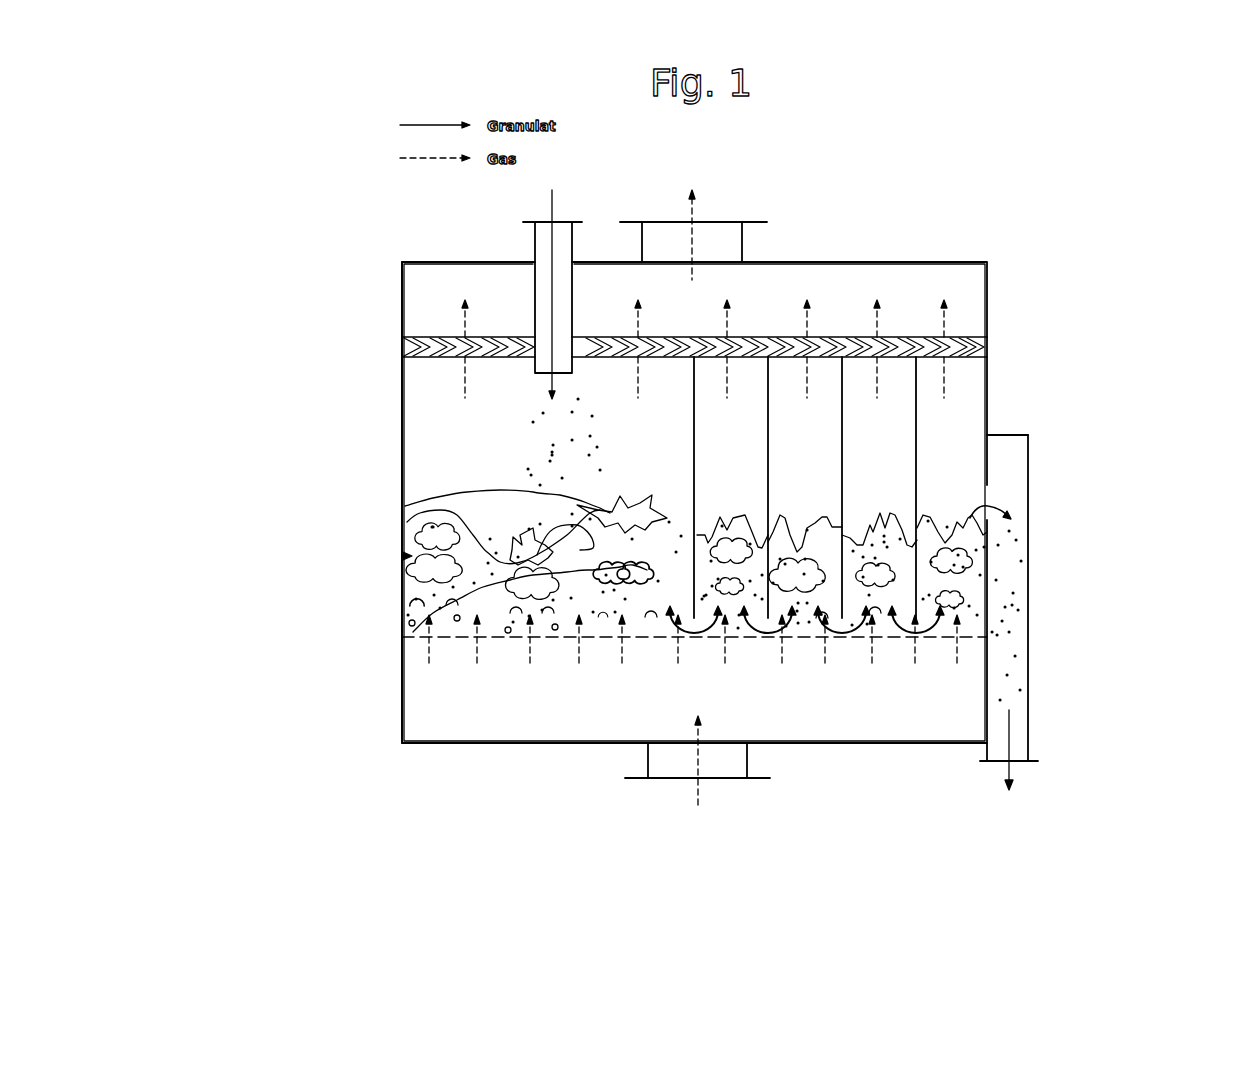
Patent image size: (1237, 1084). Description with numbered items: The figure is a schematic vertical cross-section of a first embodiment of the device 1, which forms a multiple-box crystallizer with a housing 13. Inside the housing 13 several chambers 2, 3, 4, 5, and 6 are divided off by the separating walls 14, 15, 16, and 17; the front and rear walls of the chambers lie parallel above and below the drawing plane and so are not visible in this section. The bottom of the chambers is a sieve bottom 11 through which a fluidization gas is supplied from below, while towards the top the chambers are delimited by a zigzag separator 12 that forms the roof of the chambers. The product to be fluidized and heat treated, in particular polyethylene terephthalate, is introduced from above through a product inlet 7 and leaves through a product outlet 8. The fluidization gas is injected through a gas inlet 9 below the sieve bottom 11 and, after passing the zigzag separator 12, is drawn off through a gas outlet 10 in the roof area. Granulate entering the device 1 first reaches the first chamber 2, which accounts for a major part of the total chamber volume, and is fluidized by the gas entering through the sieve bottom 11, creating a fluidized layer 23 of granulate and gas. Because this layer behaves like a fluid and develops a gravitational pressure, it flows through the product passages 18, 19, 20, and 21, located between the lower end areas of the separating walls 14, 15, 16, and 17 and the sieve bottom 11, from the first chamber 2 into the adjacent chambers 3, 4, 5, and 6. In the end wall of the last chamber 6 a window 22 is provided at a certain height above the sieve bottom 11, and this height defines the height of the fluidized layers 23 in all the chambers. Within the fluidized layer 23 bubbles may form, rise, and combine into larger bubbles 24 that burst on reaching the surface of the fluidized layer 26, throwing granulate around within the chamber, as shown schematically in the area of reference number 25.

The device 1 is at (940, 222).
The first chamber 2 is at (429, 417).
The chamber 3 is at (746, 447).
The chamber 4 is at (818, 457).
The chamber 5 is at (890, 463).
The last chamber 6 is at (957, 483).
The product inlet 7 is at (540, 237).
The product outlet 8 is at (1010, 687).
The gas inlet 9 is at (713, 763).
The gas outlet 10 is at (722, 240).
The sieve bottom 11 is at (507, 640).
The zigzag separator 12 is at (771, 337).
The housing 13 is at (398, 294).
The separating wall 14 is at (692, 490).
The separating wall 15 is at (765, 488).
The separating wall 16 is at (840, 490).
The separating wall 17 is at (915, 493).
The product passage 18 is at (692, 620).
The product passage 19 is at (757, 625).
The product passage 20 is at (838, 632).
The product passage 21 is at (920, 633).
The window 22 is at (984, 501).
The fluidized layer 23 is at (401, 555).
The larger bubbles 24 is at (403, 634).
The area of bursting bubbles 25 is at (405, 506).
The surface of the fluidized layer 26 is at (416, 521).